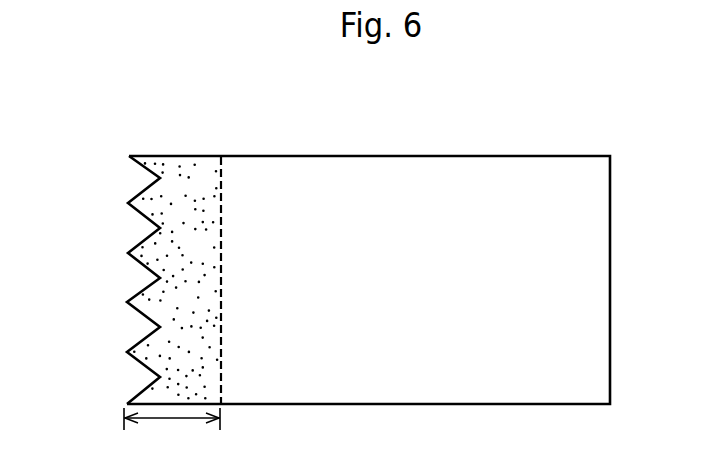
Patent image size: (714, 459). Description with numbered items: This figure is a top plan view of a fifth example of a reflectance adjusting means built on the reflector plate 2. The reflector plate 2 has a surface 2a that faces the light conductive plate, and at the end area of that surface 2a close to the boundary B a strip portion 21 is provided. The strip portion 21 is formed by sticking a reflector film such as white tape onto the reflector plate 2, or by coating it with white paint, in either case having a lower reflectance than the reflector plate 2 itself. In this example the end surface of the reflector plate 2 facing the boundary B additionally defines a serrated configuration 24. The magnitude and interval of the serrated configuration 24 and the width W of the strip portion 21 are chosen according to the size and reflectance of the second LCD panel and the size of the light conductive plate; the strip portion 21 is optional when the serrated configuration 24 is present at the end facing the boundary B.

The reflector plate 2 is at (437, 146).
The surface of the reflector plate 2a is at (528, 210).
The strip portion 21 is at (200, 182).
The serrated configuration 24 is at (142, 216).
The boundary B is at (133, 153).
The width of the strip portion W is at (172, 430).